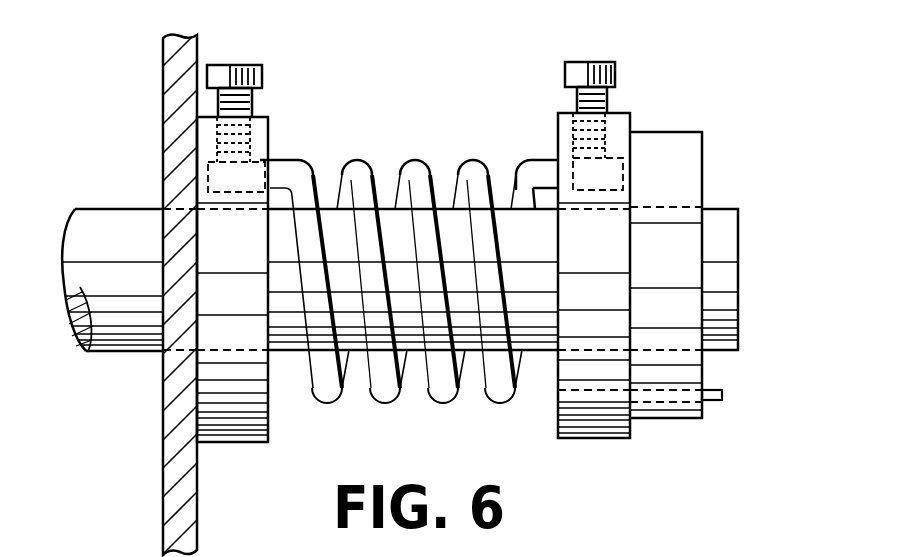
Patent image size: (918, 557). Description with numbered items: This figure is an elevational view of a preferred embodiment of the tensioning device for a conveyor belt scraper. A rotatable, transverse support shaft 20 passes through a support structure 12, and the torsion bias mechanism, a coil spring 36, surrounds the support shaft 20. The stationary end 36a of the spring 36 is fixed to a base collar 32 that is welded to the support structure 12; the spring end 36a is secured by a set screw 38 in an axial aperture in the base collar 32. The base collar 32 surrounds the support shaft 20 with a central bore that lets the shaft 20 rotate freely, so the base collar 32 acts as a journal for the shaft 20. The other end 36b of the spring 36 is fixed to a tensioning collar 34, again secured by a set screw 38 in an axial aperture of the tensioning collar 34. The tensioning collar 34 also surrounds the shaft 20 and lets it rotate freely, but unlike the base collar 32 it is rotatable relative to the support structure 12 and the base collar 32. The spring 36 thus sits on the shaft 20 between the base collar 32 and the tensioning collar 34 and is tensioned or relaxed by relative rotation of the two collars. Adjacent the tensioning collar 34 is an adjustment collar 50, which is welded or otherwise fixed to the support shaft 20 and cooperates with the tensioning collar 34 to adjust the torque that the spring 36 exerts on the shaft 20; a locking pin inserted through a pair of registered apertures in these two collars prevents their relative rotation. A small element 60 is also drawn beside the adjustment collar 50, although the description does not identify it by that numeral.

The support structure 12 is at (173, 89).
The support shaft 20 is at (103, 223).
The base collar 32 is at (262, 132).
The tensioning collar 34 is at (618, 130).
The coil spring 36 is at (387, 257).
The stationary end of the spring 36a is at (275, 172).
The other end of the spring 36b is at (548, 173).
The set screw 38 is at (260, 64).
The adjustment collar 50 is at (680, 147).
The key 60 is at (722, 399).